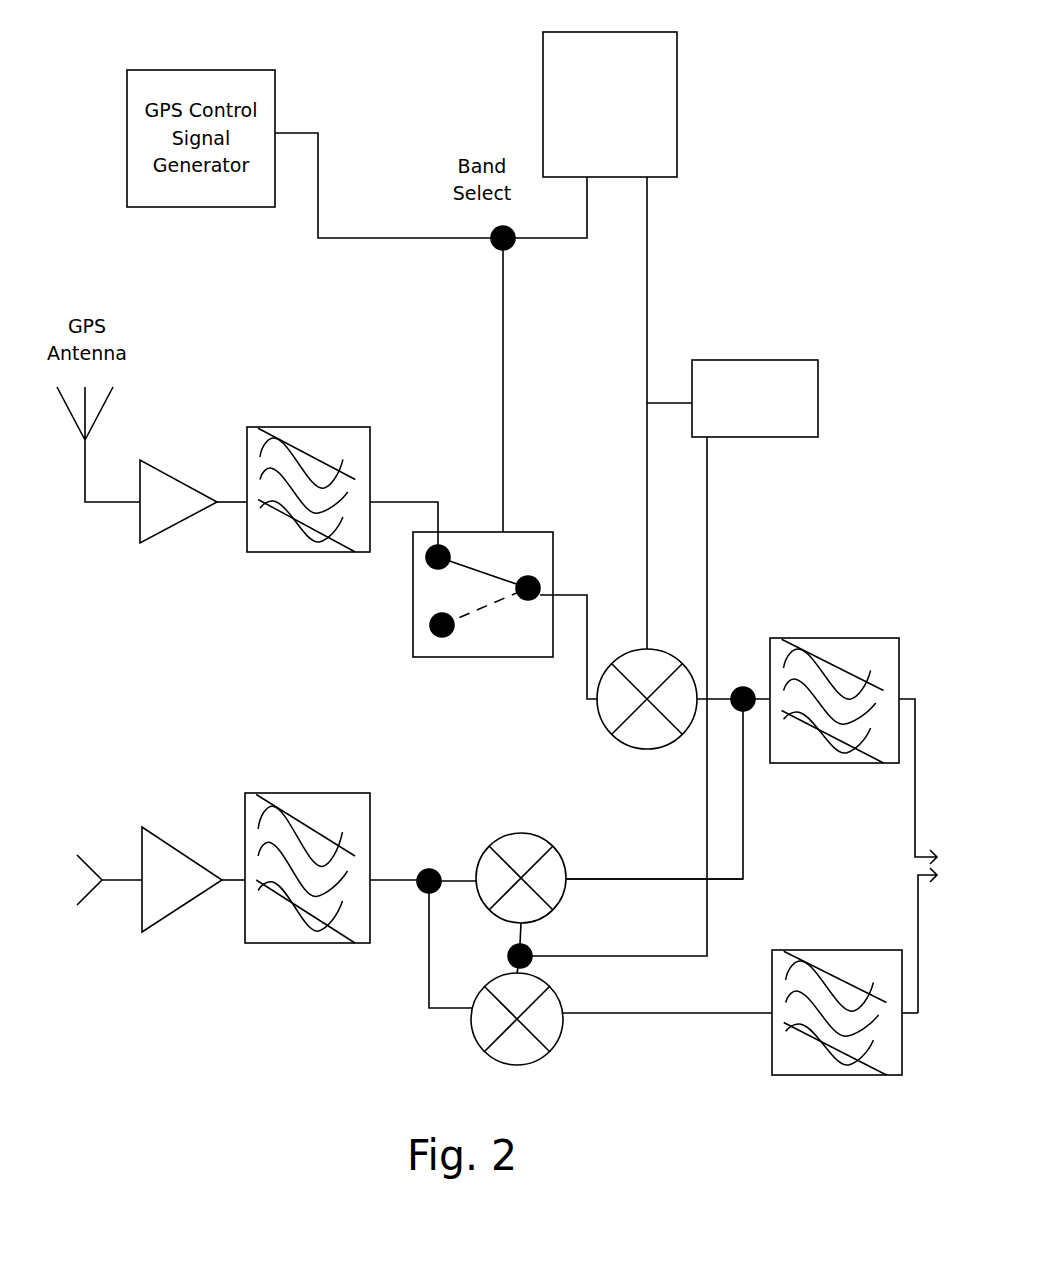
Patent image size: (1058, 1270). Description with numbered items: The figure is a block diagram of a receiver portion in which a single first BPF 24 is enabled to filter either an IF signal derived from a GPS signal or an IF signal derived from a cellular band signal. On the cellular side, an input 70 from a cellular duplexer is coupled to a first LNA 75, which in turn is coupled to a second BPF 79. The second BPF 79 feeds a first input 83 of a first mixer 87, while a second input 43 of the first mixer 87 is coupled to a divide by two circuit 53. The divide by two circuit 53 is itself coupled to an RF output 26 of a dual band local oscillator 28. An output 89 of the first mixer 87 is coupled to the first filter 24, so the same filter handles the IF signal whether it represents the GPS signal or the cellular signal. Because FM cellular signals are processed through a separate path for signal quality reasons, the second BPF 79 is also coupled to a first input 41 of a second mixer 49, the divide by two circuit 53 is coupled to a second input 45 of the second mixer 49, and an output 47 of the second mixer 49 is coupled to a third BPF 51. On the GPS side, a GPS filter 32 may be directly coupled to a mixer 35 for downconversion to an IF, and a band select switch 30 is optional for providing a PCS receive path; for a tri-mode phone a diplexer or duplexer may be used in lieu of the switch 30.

The first BPF 24 is at (812, 638).
The RF output 26 is at (648, 240).
The dual band local oscillator 28 is at (677, 113).
The band select switch 30 is at (528, 532).
The GPS filter 32 is at (340, 427).
The mixer 35 is at (667, 660).
The first input 41 is at (470, 1015).
The second input 43 is at (530, 923).
The second input 45 is at (533, 970).
The output 47 is at (577, 1015).
The second mixer 49 is at (514, 1037).
The third BPF 51 is at (860, 950).
The divide by two circuit 53 is at (793, 360).
The input 70 is at (87, 890).
The first LNA 75 is at (183, 855).
The second BPF 79 is at (307, 943).
The first input 83 is at (467, 878).
The first mixer 87 is at (530, 830).
The output 89 is at (582, 878).